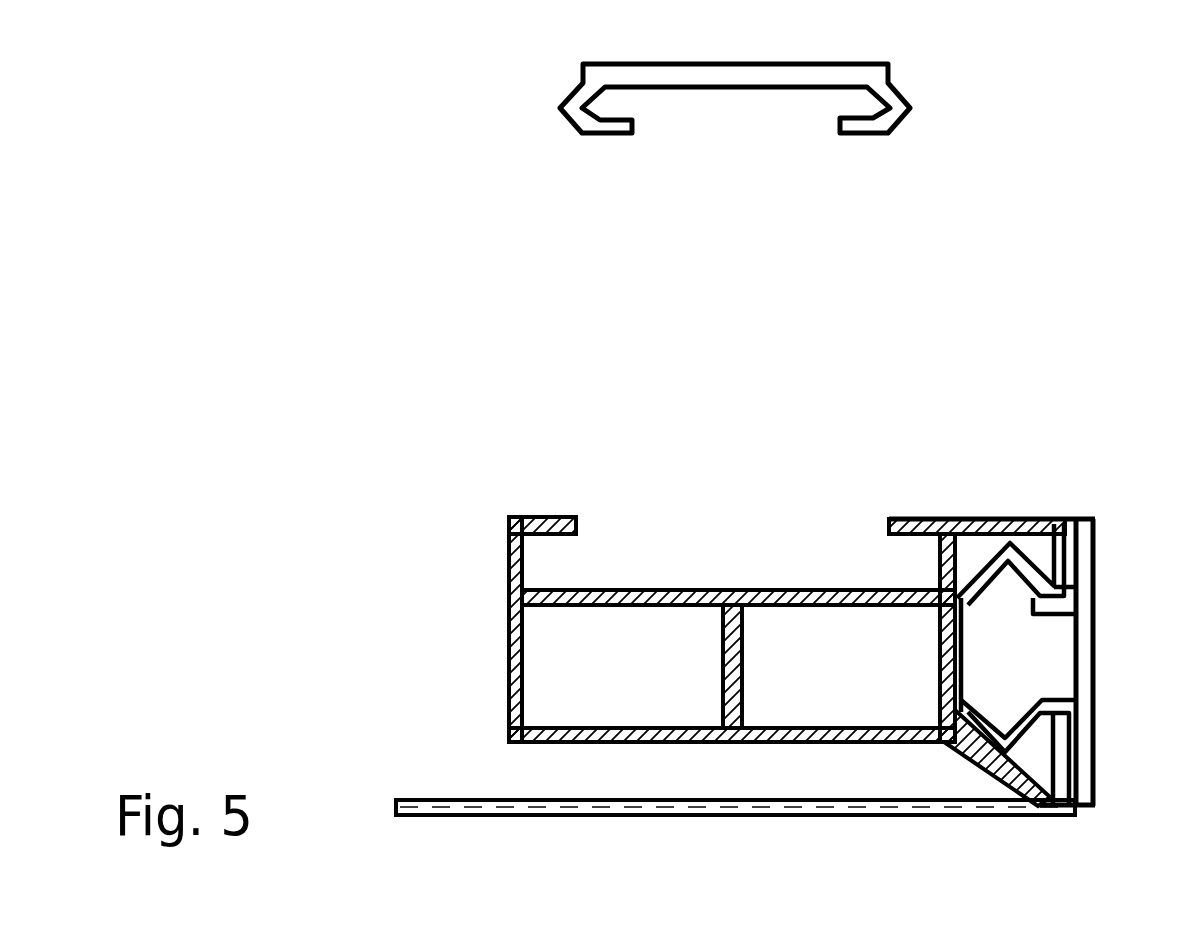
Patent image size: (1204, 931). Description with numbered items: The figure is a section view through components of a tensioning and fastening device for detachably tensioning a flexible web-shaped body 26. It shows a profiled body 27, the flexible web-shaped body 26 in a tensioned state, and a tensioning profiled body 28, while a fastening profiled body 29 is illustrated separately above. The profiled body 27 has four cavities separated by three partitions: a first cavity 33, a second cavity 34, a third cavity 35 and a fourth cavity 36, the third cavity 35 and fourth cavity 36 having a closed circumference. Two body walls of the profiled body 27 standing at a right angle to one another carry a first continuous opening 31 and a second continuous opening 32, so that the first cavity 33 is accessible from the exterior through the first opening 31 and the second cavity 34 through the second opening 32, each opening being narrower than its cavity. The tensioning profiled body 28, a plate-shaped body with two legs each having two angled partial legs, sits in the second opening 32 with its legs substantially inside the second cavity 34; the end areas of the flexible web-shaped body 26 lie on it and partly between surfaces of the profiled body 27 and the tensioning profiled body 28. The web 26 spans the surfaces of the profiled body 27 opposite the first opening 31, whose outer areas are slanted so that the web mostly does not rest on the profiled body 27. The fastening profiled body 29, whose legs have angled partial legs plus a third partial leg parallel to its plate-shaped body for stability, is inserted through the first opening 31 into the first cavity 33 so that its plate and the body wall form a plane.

The flexible web-shaped body 26 is at (473, 800).
The profiled body 27 is at (1000, 521).
The tensioning profiled body 28 is at (1080, 580).
The fastening profiled body 29 is at (855, 125).
The first continuous opening 31 is at (786, 503).
The second continuous opening 32 is at (1063, 662).
The first cavity 33 is at (752, 568).
The second cavity 34 is at (1042, 685).
The third cavity 35 is at (655, 685).
The fourth cavity 36 is at (853, 685).